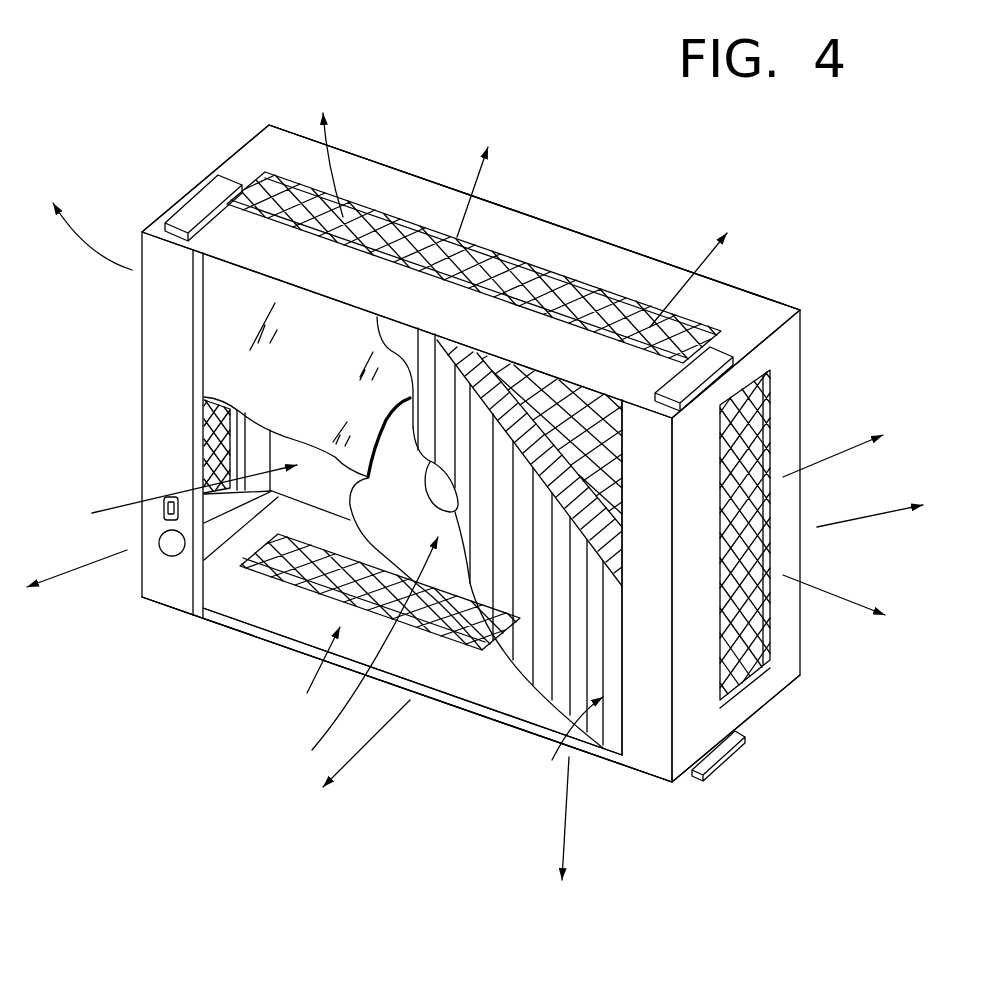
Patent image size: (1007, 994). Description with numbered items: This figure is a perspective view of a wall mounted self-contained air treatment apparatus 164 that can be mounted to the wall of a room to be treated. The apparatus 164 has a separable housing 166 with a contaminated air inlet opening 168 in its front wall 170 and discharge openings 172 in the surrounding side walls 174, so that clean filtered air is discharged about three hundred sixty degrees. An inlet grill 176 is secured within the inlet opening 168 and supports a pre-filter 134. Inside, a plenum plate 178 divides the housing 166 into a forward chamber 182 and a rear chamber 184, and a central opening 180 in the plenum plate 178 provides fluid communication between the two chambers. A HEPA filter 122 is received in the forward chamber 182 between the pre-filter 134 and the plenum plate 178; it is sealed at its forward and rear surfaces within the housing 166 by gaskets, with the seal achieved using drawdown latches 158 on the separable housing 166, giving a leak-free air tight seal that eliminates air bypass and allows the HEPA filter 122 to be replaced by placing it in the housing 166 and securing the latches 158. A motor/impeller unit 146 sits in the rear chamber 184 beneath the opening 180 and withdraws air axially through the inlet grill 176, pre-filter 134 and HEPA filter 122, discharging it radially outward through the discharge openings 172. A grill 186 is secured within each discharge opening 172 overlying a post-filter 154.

The HEPA filter 122 is at (557, 700).
The pre-filter 134 is at (600, 567).
The motor/impeller unit 146 is at (349, 653).
The post-filter 154 is at (220, 453).
The drawdown latches 158 is at (228, 187).
The wall mounted self-contained air treatment apparatus 164 is at (740, 197).
The separable housing 166 is at (760, 310).
The contaminated air inlet opening 168 is at (307, 618).
The front wall 170 is at (663, 732).
The discharge openings 172 is at (377, 208).
The side walls 174 is at (518, 237).
The inlet grill 176 is at (602, 497).
The plenum plate 178 is at (240, 340).
The central opening 180 is at (382, 417).
The forward chamber 182 is at (310, 675).
The rear chamber 184 is at (178, 505).
The grill 186 is at (562, 293).